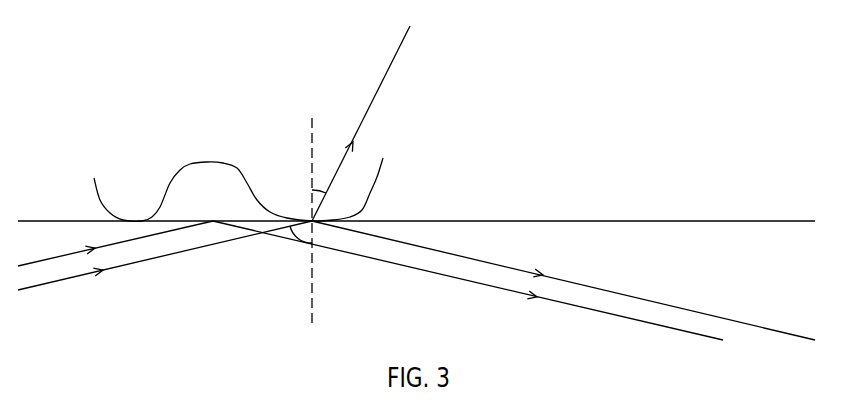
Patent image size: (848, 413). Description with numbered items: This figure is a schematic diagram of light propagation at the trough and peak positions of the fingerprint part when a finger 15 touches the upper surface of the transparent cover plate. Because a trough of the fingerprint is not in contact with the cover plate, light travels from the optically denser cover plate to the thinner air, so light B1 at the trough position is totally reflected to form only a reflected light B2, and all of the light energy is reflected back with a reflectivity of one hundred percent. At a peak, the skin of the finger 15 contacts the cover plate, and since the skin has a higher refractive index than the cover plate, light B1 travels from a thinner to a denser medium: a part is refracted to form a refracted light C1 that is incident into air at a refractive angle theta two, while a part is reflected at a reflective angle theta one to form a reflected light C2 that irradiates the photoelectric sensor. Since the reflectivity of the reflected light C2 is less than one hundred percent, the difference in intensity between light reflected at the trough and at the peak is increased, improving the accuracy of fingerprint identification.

The finger 15 is at (375, 186).
The light B1 is at (165, 260).
The reflected light B2 is at (468, 280).
The refracted light C1 is at (361, 123).
The reflected light C2 is at (563, 280).